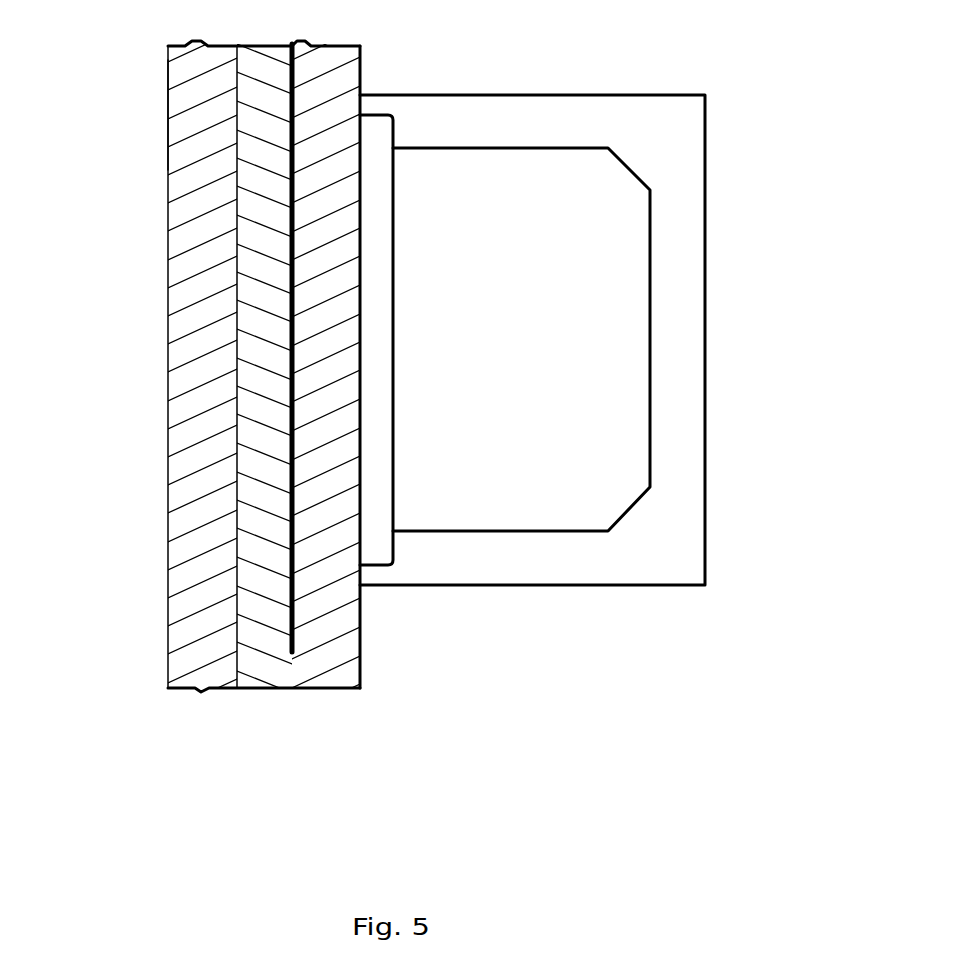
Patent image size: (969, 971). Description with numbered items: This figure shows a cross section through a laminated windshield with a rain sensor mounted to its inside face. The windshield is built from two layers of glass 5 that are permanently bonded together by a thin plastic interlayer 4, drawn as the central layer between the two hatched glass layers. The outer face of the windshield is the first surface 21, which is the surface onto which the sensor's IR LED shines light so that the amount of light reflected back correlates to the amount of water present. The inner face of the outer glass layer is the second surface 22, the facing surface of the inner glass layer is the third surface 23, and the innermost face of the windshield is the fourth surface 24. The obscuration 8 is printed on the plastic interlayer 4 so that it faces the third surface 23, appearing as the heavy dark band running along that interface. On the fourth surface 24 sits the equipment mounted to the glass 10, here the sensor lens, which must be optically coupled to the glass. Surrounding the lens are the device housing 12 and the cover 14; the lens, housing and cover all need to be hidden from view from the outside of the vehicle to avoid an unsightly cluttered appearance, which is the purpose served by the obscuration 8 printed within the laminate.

The plastic interlayer 4 is at (265, 690).
The glass 5 is at (203, 690).
The obscuration 8 is at (295, 636).
The equipment mounted to glass 10 is at (394, 557).
The device housing 12 is at (651, 488).
The cover 14 is at (706, 370).
The first surface of glass 21 is at (165, 115).
The second surface of glass 22 is at (234, 60).
The third surface of glass 23 is at (297, 64).
The fourth surface of glass 24 is at (363, 622).